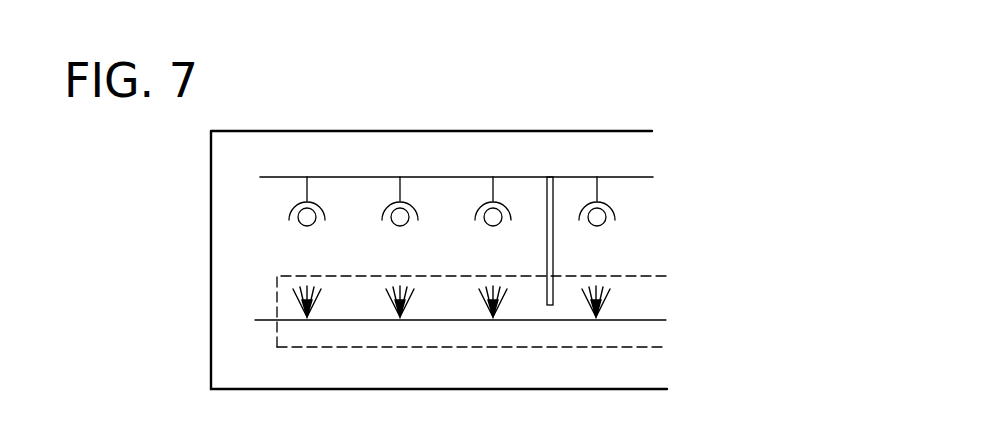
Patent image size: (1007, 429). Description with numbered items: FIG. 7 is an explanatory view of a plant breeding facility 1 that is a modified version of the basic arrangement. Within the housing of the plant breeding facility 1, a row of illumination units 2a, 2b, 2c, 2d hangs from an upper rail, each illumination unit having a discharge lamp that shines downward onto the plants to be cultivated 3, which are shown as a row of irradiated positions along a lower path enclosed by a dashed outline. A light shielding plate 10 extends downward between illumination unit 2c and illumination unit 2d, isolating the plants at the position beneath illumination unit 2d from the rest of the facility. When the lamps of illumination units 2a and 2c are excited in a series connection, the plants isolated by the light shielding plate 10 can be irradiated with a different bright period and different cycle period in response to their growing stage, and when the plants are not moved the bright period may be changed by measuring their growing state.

The plant breeding facility 1 is at (211, 335).
The illumination unit 2a is at (300, 224).
The illumination unit 2b is at (393, 224).
The illumination unit 2c is at (486, 224).
The illumination unit 2d is at (604, 223).
The plants to be cultivated 3 is at (277, 297).
The light shielding plate 10 is at (554, 258).